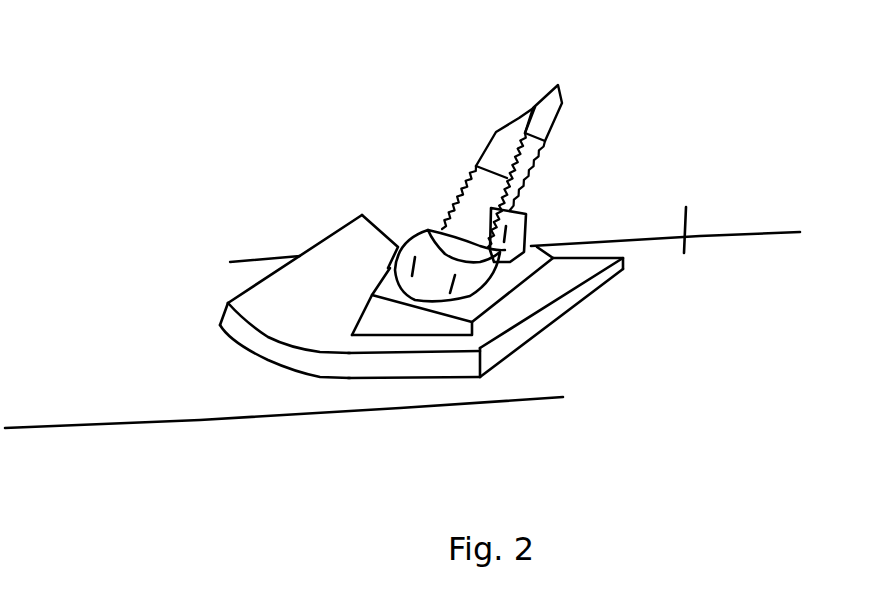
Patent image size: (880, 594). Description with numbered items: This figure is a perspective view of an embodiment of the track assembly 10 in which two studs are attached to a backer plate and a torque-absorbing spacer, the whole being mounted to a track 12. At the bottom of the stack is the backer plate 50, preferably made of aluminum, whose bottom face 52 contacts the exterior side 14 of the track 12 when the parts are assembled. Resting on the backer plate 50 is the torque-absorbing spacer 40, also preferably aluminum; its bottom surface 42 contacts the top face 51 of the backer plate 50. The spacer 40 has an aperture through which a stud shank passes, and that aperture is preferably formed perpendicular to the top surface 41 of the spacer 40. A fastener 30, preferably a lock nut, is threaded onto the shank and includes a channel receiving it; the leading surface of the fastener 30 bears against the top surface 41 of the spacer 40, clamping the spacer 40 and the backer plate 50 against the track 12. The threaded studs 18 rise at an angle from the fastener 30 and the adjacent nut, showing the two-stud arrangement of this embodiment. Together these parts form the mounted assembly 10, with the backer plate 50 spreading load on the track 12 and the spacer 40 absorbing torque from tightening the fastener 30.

The track assembly 10 is at (357, 98).
The track 12 is at (705, 235).
The exterior side 14 is at (682, 207).
The screw fastener 18 is at (530, 175).
The fastener 30 is at (417, 228).
The torque-absorbing spacer 40 is at (387, 318).
The top surface 41 is at (390, 272).
The bottom surface 42 is at (437, 333).
The backer plate 50 is at (270, 343).
The top face 51 is at (260, 307).
The bottom face 52 is at (235, 339).